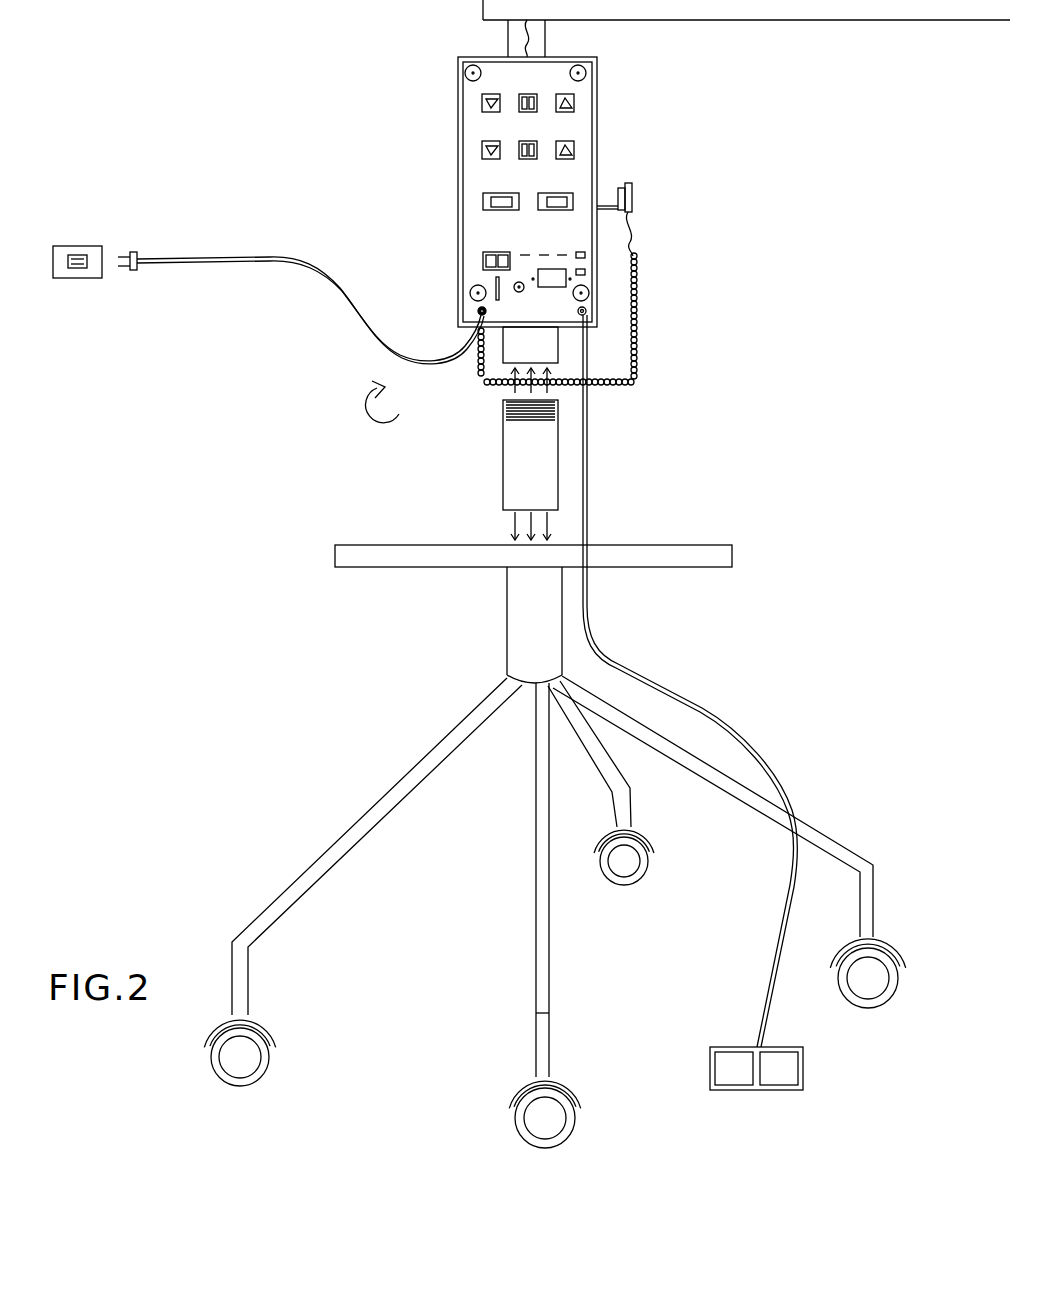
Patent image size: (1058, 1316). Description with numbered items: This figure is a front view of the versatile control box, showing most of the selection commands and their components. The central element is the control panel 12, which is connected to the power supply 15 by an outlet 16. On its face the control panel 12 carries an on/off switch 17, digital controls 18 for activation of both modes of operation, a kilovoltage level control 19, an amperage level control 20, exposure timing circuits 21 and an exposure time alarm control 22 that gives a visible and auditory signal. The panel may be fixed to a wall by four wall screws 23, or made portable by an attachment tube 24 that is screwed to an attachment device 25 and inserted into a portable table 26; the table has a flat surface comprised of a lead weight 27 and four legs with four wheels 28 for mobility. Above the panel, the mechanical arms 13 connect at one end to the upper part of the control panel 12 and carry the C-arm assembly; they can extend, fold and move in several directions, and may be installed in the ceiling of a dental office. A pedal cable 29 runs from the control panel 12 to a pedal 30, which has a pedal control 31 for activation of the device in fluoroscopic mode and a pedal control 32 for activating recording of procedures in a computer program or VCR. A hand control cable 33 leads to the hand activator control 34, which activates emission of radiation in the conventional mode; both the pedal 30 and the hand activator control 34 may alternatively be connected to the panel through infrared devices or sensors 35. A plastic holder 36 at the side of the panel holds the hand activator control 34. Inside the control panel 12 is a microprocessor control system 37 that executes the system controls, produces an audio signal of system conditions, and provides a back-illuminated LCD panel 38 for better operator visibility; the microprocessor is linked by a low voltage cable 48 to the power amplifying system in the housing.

The control panel 12 is at (597, 167).
The mechanical arms 13 is at (846, 10).
The power supply 15 is at (138, 252).
The outlet 16 is at (77, 248).
The on/off switch 17 is at (583, 315).
The digital controls 18 is at (552, 201).
The kilovoltage level control 19 is at (556, 150).
The amperage level control 20 is at (556, 102).
The exposure timing circuits 21 is at (497, 285).
The exposure time alarm control 22 is at (585, 255).
The wall screws 23 is at (586, 73).
The attachment tube 24 is at (515, 348).
The attachment device 25 is at (530, 483).
The portable table 26 is at (732, 555).
The lead weight 27 is at (345, 556).
The wheels 28 is at (367, 810).
The pedal cable 29 is at (622, 667).
The pedal 30 is at (710, 1068).
The pedal control 31 is at (735, 1090).
The pedal control 32 is at (803, 1070).
The hand control cable 33 is at (640, 371).
The hand activator control 34 is at (632, 215).
The infrared devices or sensors 35 is at (585, 275).
The plastic holder 36 is at (632, 190).
The microprocessor control system 37 is at (472, 58).
The LCD panel 38 is at (522, 291).
The low voltage cable 48 is at (530, 38).